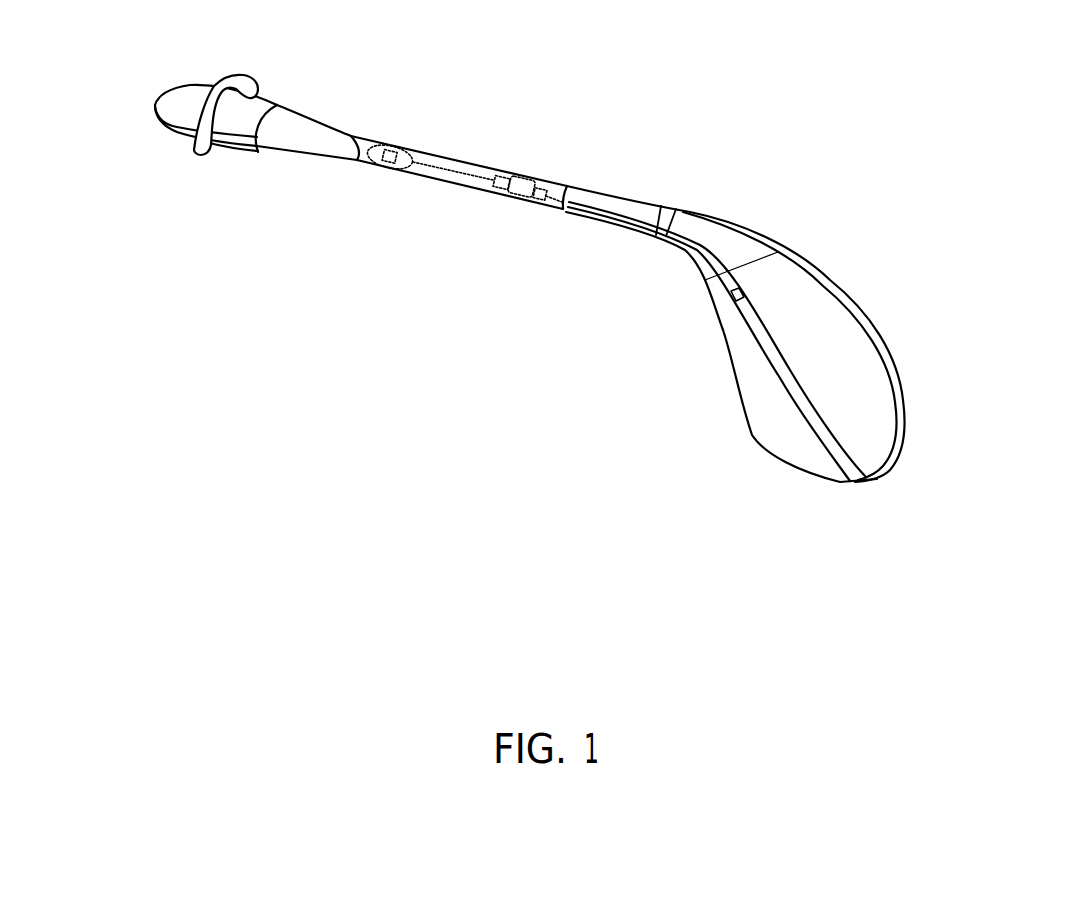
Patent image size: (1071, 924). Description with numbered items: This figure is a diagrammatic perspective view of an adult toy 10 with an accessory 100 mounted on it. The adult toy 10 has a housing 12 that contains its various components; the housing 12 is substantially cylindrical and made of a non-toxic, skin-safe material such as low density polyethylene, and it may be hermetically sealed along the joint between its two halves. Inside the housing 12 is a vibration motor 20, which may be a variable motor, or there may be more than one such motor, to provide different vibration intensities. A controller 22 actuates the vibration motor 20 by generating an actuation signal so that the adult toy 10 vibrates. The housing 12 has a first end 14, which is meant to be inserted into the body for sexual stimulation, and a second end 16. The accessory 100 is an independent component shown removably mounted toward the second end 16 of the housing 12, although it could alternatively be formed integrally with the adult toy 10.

The adult toy 10 is at (781, 188).
The housing 12 is at (460, 152).
The first end 14 is at (878, 479).
The second end 16 is at (155, 100).
The vibration motor 20 is at (525, 173).
The controller 22 is at (392, 143).
The accessory 100 is at (216, 70).